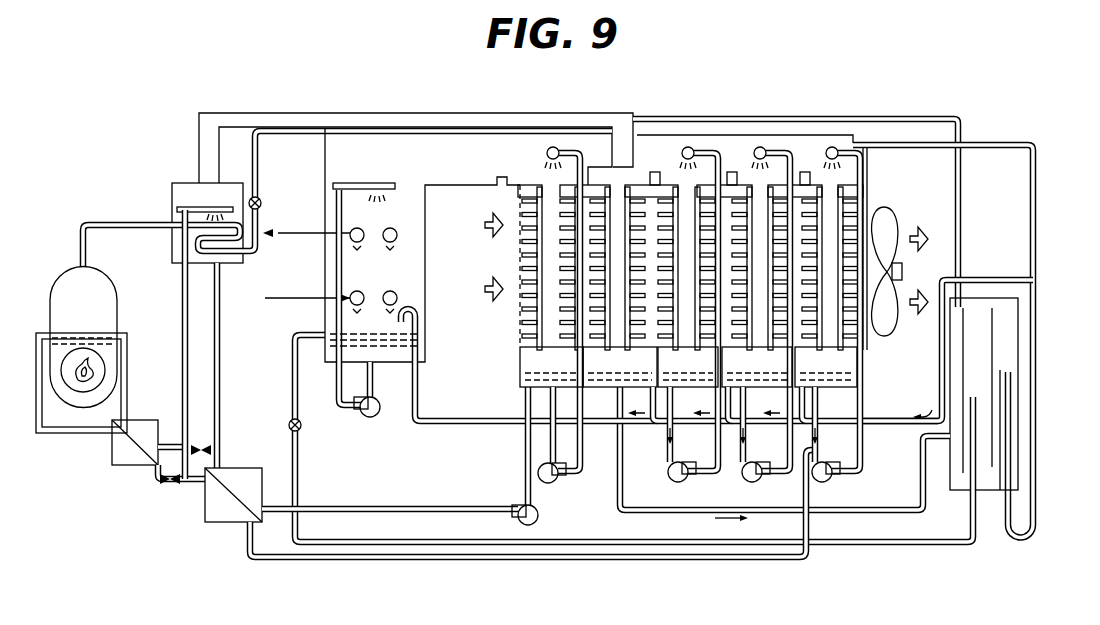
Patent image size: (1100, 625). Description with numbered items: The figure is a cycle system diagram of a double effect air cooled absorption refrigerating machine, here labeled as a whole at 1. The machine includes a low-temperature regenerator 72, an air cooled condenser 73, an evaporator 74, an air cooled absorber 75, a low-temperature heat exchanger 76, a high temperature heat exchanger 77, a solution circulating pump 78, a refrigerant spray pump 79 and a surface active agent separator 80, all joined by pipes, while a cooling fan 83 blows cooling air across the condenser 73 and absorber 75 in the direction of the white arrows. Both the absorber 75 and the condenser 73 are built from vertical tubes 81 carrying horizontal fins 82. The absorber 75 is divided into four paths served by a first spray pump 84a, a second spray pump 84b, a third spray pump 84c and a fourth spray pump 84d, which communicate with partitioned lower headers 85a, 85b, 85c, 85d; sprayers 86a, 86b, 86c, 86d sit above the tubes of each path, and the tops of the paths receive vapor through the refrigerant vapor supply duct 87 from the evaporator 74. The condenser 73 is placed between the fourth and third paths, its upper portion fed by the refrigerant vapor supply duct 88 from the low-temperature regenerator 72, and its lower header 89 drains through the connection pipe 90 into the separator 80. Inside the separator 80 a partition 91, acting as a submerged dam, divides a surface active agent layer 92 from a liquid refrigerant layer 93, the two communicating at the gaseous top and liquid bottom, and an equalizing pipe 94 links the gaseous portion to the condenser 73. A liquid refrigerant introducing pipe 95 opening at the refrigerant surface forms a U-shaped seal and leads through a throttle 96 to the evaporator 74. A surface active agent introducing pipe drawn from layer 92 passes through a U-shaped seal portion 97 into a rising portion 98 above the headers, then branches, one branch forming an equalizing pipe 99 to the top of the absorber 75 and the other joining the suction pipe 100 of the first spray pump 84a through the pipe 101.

The refrigerant vessel 1 is at (52, 305).
The low-temperature regenerator 72 is at (179, 183).
The air cooled condenser 73 is at (618, 215).
The evaporator 74 is at (412, 268).
The air cooled absorber 75 is at (702, 245).
The low-temperature heat exchanger 76 is at (218, 522).
The high temperature heat exchanger 77 is at (125, 465).
The solution circulating pump 78 is at (538, 519).
The refrigerant spray pump 79 is at (370, 416).
The surface active agent separator 80 is at (1010, 330).
The vertical tubes 81 is at (865, 162).
The horizontal fins 82 is at (867, 189).
The cooling fan 83 is at (898, 209).
The first spray pump 84a is at (829, 483).
The second spray pump 84b is at (754, 483).
The third spray pump 84c is at (679, 482).
The fourth spray pump 84d is at (558, 483).
The lower header of the first path 85a is at (860, 361).
The lower header of the second path 85b is at (732, 387).
The lower header of the third path 85c is at (672, 362).
The lower header of the fourth path 85d is at (547, 367).
The sprayer 86a is at (834, 146).
The sprayer 86b is at (762, 146).
The sprayer 86c is at (690, 146).
The sprayer 86d is at (556, 146).
The refrigerant vapor supply duct 87 is at (466, 141).
The refrigerant vapor supply duct 88 is at (410, 112).
The lower header of the condenser 89 is at (620, 367).
The connection pipe 90 is at (870, 520).
The partition 91 is at (993, 353).
The surface active agent layer 92 is at (1016, 386).
The liquid refrigerant layer 93 is at (1018, 412).
The equalizing pipe 94 is at (961, 230).
The liquid refrigerant introducing pipe 95 is at (950, 546).
The throttle 96 is at (290, 426).
The U-shaped seal portion 97 is at (1021, 548).
The rising portion 98 is at (1036, 292).
The equalizing pipe 99 is at (1038, 193).
The suction pipe 100 is at (830, 410).
The pipe 101 is at (892, 427).